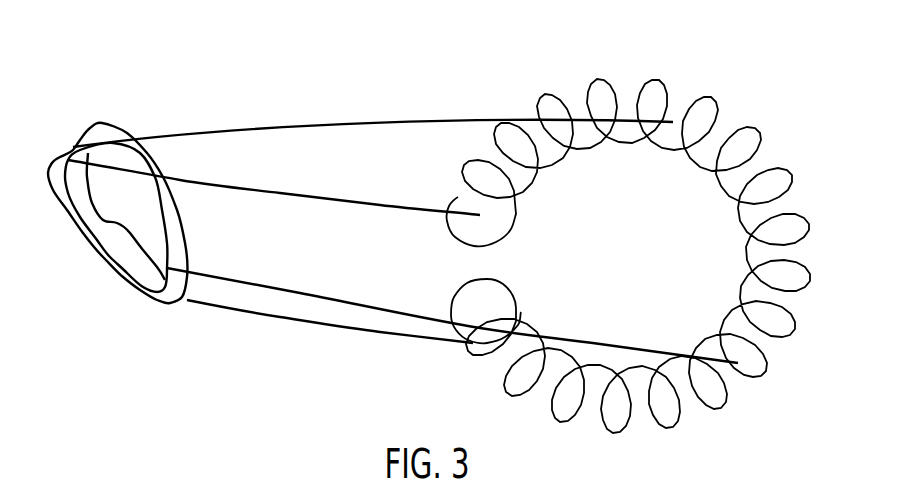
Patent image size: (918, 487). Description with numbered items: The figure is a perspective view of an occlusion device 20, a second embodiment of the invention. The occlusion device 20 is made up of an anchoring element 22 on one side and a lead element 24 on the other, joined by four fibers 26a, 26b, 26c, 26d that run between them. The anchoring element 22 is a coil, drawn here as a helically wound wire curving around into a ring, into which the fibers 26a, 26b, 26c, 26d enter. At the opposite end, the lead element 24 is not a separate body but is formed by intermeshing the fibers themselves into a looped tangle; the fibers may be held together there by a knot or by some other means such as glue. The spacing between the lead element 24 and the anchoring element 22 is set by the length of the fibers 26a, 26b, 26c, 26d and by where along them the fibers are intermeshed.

The occlusion device 20 is at (151, 90).
The anchoring element 22 is at (650, 102).
The lead element 24 is at (68, 147).
The fiber 26a is at (393, 120).
The fiber 26b is at (397, 200).
The fiber 26c is at (398, 312).
The fiber 26d is at (382, 340).